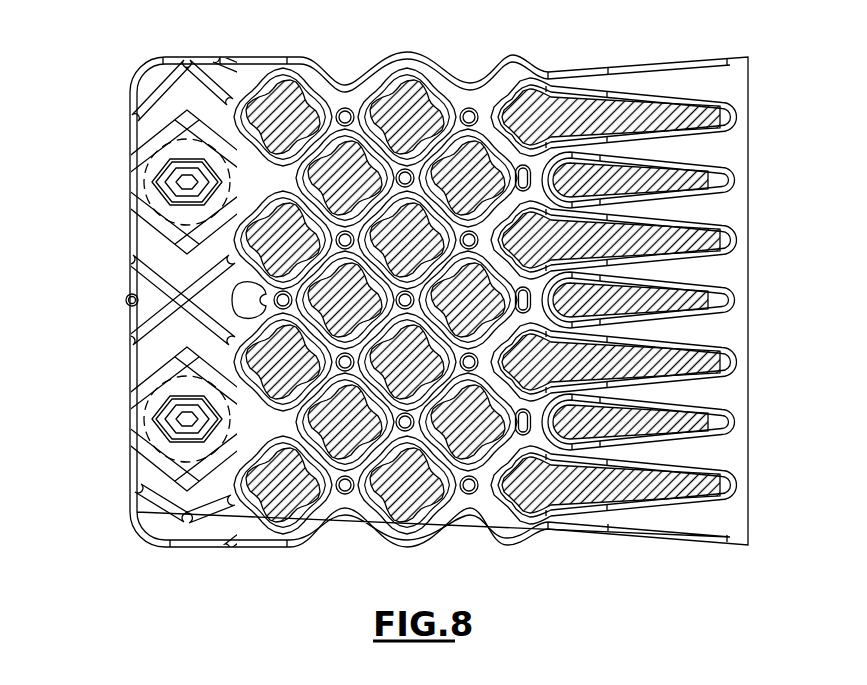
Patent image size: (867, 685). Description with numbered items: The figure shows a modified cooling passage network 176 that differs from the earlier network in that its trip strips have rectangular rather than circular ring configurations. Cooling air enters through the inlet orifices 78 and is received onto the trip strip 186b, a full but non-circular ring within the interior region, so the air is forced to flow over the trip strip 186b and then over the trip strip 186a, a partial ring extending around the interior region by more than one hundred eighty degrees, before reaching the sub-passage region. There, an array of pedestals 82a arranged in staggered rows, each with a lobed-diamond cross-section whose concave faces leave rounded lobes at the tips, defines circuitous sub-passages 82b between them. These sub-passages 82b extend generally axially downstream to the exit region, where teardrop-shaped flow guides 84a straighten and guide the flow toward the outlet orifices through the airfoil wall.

The inlet orifice 78 is at (148, 176).
The pedestal 82a is at (422, 487).
The sub-passage 82b is at (382, 488).
The flow guide 84a is at (548, 487).
The cooling passage network 176 is at (712, 558).
The trip strip 186a is at (162, 463).
The trip strip 186b is at (187, 437).